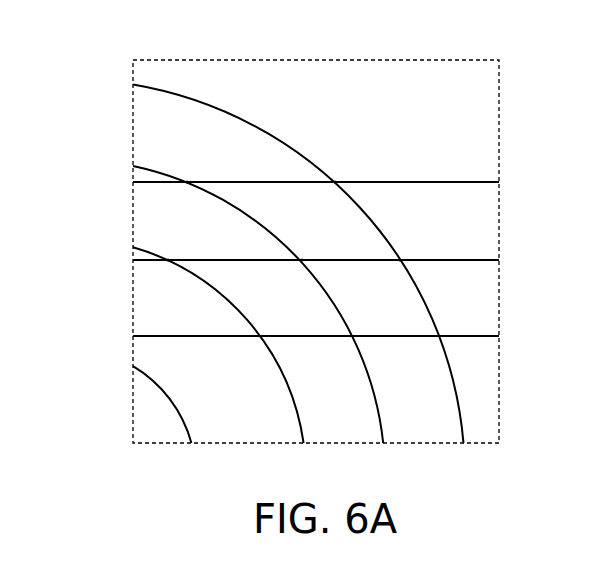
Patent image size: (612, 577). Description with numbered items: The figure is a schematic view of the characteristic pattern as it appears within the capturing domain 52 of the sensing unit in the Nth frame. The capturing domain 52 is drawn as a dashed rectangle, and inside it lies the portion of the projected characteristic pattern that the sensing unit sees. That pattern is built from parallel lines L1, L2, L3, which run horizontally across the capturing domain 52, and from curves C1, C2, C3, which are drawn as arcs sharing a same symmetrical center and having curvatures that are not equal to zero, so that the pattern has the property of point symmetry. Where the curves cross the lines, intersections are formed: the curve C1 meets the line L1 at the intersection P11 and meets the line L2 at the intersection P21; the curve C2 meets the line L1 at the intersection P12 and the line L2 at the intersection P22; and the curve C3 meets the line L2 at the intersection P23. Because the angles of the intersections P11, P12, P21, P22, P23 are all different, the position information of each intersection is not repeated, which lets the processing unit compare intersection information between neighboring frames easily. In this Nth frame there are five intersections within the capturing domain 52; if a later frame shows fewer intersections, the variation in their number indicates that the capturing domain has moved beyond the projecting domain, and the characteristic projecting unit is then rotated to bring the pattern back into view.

The capturing domain 52 is at (318, 57).
The curve C1 is at (156, 88).
The curve C2 is at (152, 170).
The curve C3 is at (152, 252).
The parallel line L1 is at (488, 181).
The parallel line L2 is at (488, 259).
The parallel line L3 is at (488, 335).
The intersection P11 is at (335, 181).
The intersection P12 is at (188, 181).
The intersection P21 is at (400, 259).
The intersection P22 is at (302, 259).
The intersection P23 is at (168, 259).